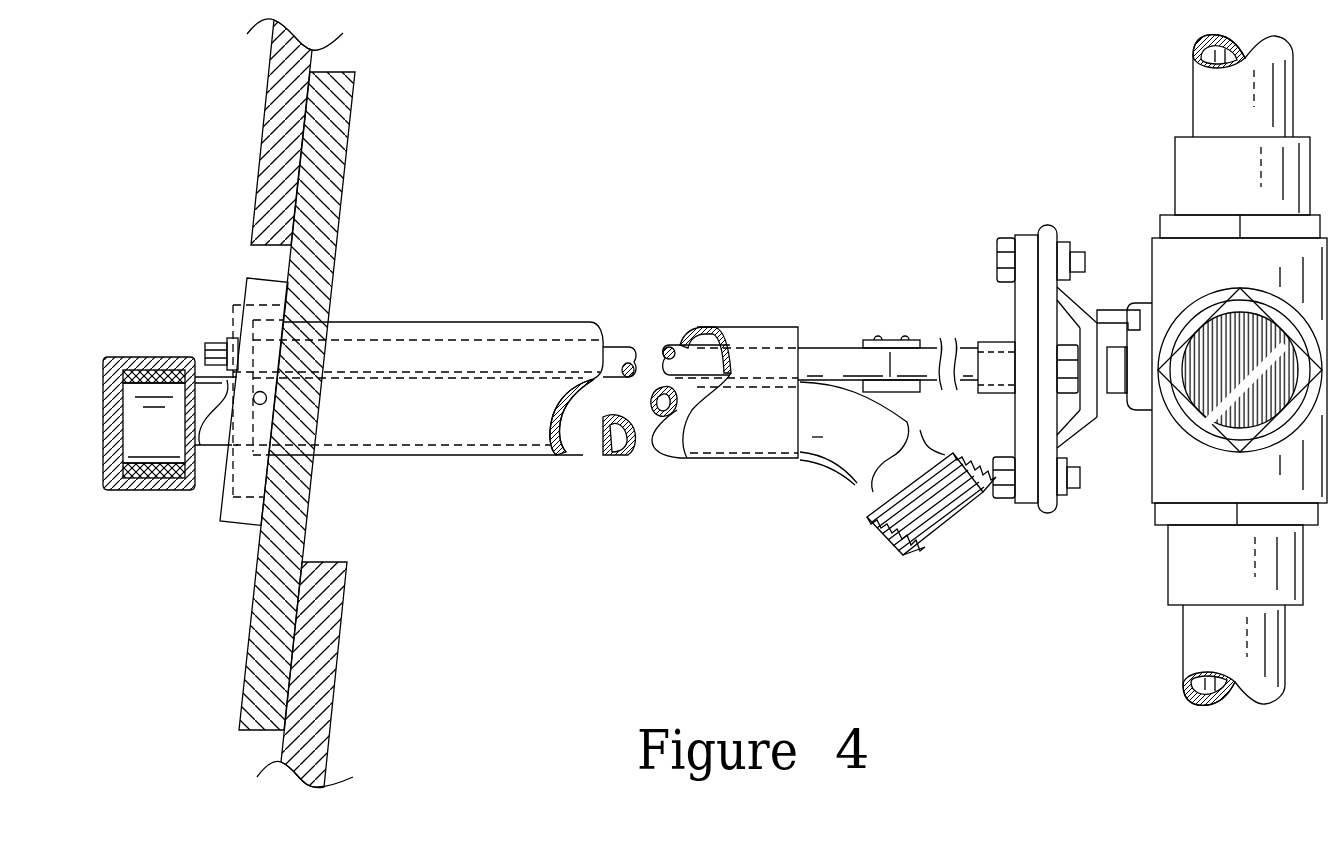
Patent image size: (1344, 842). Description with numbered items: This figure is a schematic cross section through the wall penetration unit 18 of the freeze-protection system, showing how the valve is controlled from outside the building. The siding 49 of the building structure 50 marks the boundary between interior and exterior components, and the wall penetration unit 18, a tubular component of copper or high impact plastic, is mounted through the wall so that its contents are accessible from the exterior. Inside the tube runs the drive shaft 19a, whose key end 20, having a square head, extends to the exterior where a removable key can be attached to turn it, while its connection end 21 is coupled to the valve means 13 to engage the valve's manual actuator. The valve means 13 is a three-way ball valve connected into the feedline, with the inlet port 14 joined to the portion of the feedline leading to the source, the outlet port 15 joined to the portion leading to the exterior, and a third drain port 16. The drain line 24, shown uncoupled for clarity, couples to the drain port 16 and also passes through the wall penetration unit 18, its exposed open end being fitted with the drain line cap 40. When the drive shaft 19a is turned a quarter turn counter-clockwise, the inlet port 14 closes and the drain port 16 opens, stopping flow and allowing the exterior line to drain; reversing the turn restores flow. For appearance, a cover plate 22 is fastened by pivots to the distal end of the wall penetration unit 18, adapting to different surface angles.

The valve means 13 is at (1157, 480).
The inlet port 14 is at (1188, 173).
The outlet port 15 is at (1187, 553).
The drain port 16 is at (1213, 413).
The wall penetration unit 18 is at (488, 320).
The drive shaft 19a is at (837, 348).
The key end 20 is at (217, 340).
The connection end 21 is at (985, 342).
The cover plate 22 is at (230, 527).
The drain line 24 is at (843, 455).
The drain line cap 40 is at (147, 360).
The siding 49 is at (338, 168).
The building structure 50 is at (587, 579).